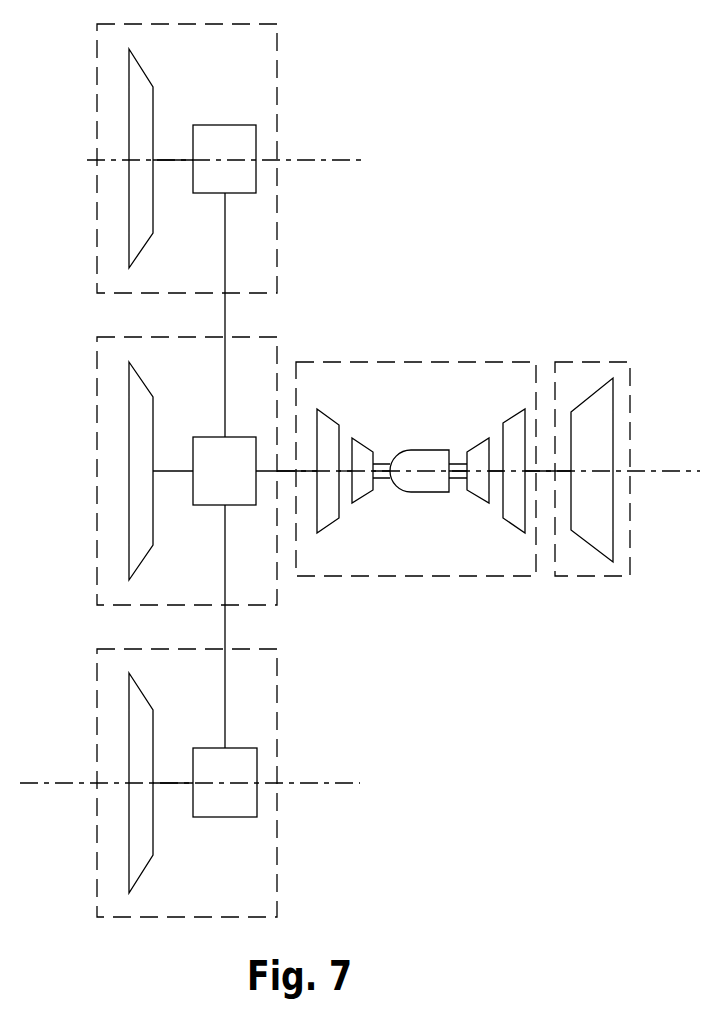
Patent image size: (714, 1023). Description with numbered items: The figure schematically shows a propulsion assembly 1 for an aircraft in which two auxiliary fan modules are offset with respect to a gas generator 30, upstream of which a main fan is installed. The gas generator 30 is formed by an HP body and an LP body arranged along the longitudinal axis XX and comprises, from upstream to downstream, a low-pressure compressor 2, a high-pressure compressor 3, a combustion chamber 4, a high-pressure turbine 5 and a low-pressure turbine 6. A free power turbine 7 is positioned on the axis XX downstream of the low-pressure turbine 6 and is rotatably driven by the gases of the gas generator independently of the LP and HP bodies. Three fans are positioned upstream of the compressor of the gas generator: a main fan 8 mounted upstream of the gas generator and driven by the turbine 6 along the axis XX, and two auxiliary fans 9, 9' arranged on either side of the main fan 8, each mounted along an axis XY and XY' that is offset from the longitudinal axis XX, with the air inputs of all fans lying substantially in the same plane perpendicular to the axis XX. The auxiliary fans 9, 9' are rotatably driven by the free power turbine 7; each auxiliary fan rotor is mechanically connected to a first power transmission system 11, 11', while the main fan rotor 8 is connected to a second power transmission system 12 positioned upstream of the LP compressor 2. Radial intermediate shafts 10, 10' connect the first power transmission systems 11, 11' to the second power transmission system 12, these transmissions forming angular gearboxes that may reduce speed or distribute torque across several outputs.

The propulsion assembly 1 is at (528, 266).
The low-pressure compressor 2 is at (330, 427).
The high-pressure compressor 3 is at (363, 455).
The combustion chamber 4 is at (422, 460).
The high-pressure turbine 5 is at (478, 455).
The low-pressure turbine 6 is at (515, 430).
The free power turbine 7 is at (597, 400).
The main fan 8 is at (138, 537).
The auxiliary fan 9 is at (129, 783).
The auxiliary fan 9' is at (127, 158).
The intermediate shaft 10 is at (276, 626).
The intermediate shaft 10' is at (280, 315).
The first power transmission system 11 is at (259, 768).
The first power transmission system 11' is at (263, 145).
The second power transmission system 12 is at (209, 500).
The gas generator 30 is at (448, 540).
The longitudinal axis XX is at (660, 472).
The axis XY is at (190, 821).
The axis XY' is at (253, 139).